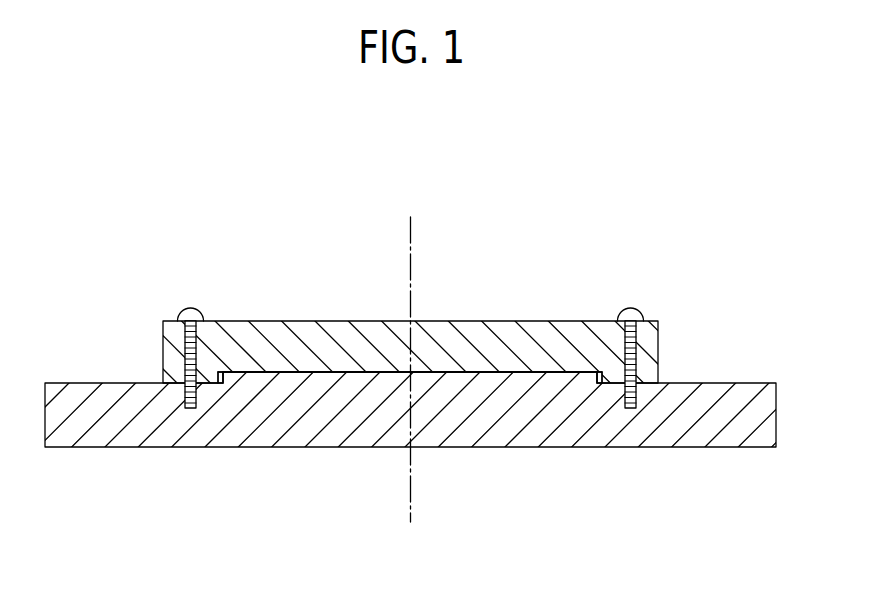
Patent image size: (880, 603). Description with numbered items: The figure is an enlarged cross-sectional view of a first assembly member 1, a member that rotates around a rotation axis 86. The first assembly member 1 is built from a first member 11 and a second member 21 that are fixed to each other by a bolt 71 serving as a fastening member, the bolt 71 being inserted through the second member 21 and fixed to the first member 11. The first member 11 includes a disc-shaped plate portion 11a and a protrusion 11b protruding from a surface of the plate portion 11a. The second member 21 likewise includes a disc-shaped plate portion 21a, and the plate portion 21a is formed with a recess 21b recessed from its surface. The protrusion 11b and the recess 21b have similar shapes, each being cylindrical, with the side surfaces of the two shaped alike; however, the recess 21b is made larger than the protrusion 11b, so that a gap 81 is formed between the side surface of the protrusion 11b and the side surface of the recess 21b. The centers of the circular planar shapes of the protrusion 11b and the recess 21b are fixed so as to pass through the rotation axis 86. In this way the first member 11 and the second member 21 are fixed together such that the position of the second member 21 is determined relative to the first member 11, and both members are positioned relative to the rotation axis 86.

The first assembly member 1 is at (712, 187).
The first member 11 is at (588, 474).
The plate portion 11a is at (482, 422).
The protrusion 11b is at (528, 378).
The second member 21 is at (585, 186).
The plate portion 21a is at (473, 332).
The recess 21b is at (508, 372).
The bolt 71 is at (186, 356).
The gap 81 is at (228, 372).
The rotation axis 86 is at (412, 234).